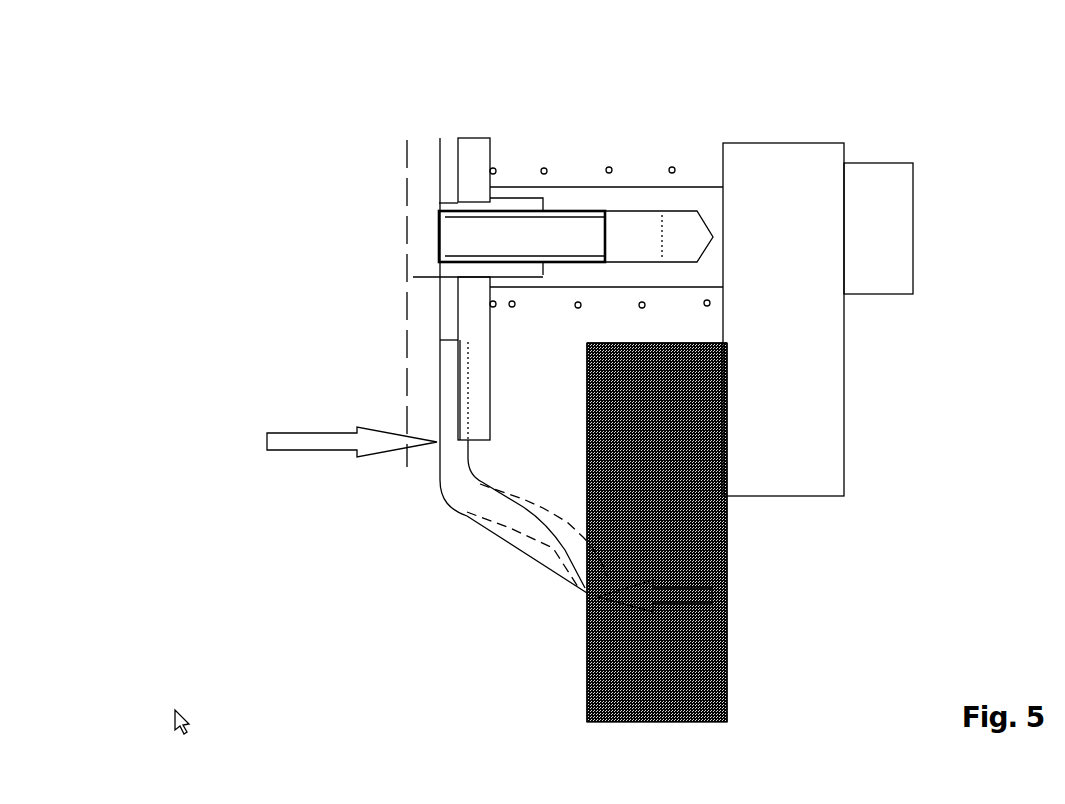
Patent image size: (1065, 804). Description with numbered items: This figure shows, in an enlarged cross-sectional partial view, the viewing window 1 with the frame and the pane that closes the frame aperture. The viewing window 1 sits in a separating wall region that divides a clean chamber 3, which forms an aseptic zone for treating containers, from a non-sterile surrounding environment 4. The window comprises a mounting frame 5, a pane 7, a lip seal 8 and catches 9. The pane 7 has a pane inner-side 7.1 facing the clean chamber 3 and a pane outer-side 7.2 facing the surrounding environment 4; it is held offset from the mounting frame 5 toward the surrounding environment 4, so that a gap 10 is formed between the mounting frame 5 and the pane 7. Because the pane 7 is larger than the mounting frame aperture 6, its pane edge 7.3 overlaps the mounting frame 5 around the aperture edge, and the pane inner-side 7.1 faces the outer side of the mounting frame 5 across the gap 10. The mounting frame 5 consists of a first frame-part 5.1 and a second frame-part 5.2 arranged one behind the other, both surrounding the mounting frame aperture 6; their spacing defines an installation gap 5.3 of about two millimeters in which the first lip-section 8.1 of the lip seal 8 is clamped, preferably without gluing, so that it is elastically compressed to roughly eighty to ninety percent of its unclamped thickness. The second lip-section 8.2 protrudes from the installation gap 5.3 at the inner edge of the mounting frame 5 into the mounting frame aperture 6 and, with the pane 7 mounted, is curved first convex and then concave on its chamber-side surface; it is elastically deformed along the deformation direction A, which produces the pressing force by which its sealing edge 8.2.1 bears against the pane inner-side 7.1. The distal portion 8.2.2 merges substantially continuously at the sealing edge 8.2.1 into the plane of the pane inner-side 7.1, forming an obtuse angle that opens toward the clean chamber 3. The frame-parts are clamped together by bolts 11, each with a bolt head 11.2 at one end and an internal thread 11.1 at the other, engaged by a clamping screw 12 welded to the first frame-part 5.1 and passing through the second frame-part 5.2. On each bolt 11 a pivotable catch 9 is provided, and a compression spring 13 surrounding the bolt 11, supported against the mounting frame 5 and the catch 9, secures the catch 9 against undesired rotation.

The viewing window 1 is at (203, 145).
The clean chamber 3 is at (330, 555).
The surrounding environment 4 is at (950, 400).
The mounting frame 5 is at (395, 313).
The first frame-part 5.1 is at (417, 369).
The second frame-part 5.2 is at (480, 155).
The installation gap 5.3 is at (450, 325).
The mounting frame aperture 6 is at (352, 607).
The pane 7 is at (693, 626).
The pane inner-side 7.1 is at (587, 650).
The pane outer-side 7.2 is at (727, 670).
The pane edge 7.3 is at (673, 345).
The lip seal 8 is at (436, 489).
The first lip-section 8.1 is at (447, 392).
The second lip-section 8.2 is at (480, 520).
The sealing edge 8.2.1 is at (588, 595).
The distal portion 8.2.2 is at (537, 565).
The catch 9 is at (800, 367).
The gap 10 is at (540, 380).
The bolt 11 is at (630, 185).
The internal thread 11.1 is at (608, 210).
The bolt head 11.2 is at (885, 215).
The clamping screw 12 is at (482, 238).
The compression spring 13 is at (576, 308).
The deformation direction A is at (533, 497).